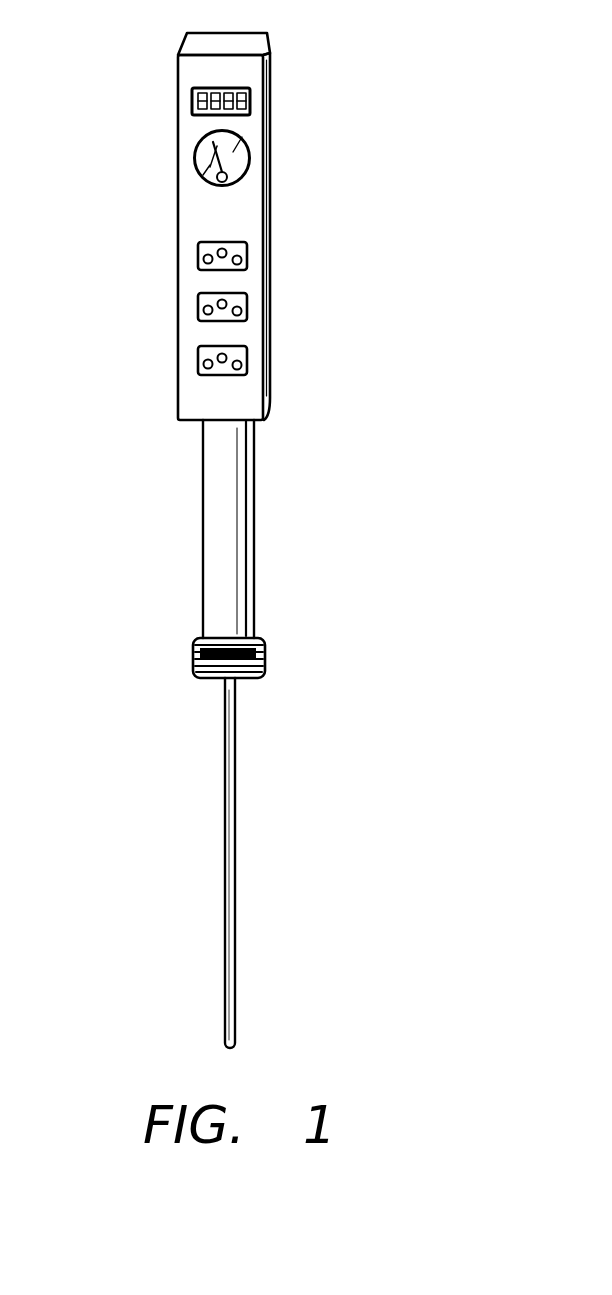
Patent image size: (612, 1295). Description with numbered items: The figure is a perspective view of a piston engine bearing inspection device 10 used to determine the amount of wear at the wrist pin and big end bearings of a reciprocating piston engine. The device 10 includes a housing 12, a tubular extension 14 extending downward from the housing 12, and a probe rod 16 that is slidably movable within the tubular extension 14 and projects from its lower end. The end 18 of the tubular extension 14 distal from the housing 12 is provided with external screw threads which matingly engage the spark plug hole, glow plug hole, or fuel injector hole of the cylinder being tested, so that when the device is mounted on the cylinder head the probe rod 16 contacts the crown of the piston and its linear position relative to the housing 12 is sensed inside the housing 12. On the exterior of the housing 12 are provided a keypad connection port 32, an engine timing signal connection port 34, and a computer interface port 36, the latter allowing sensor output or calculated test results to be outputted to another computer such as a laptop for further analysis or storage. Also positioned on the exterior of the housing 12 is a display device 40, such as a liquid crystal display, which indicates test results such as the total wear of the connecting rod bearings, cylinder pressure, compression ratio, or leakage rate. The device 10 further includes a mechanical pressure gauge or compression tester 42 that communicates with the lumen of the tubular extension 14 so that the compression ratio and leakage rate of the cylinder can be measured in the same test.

The device 10 is at (366, 106).
The housing 12 is at (265, 245).
The tubular extension 14 is at (242, 518).
The probe rod 16 is at (235, 823).
The threaded end 18 is at (262, 662).
The keypad connection port 32 is at (247, 307).
The engine timing signal connection port 34 is at (198, 257).
The computer interface port 36 is at (198, 365).
The display device 40 is at (193, 110).
The compression tester 42 is at (240, 172).